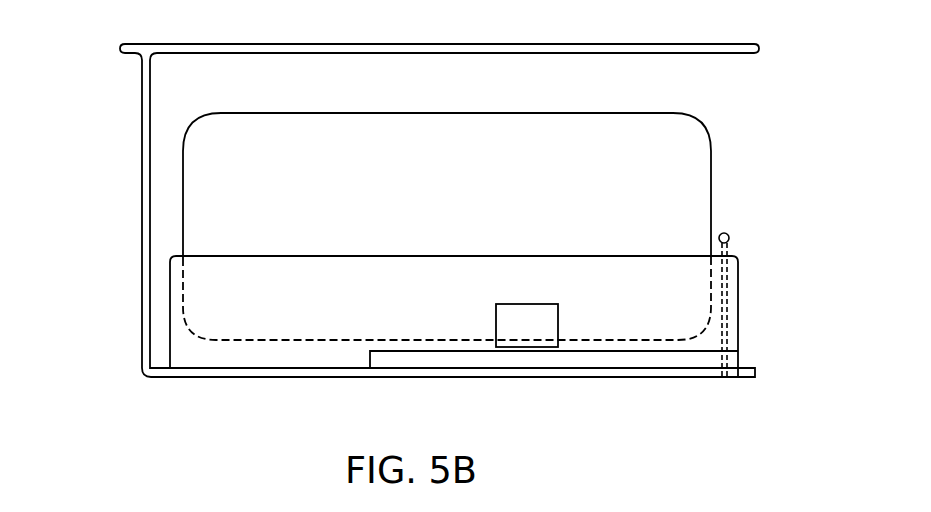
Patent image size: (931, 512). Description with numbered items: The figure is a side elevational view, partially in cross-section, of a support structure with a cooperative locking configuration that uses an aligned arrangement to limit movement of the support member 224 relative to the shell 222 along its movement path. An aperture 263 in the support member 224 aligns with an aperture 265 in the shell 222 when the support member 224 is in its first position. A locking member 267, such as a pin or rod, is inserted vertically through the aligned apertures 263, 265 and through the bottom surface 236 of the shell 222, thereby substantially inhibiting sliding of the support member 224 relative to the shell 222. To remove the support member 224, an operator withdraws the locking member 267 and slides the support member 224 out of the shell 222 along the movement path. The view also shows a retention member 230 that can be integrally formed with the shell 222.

The shell 222 is at (128, 171).
The support member 224 is at (515, 280).
The retention member 230 is at (496, 325).
The bottom surface 236 is at (580, 378).
The aperture 263 is at (739, 291).
The aperture 265 is at (736, 366).
The locking member 267 is at (750, 253).